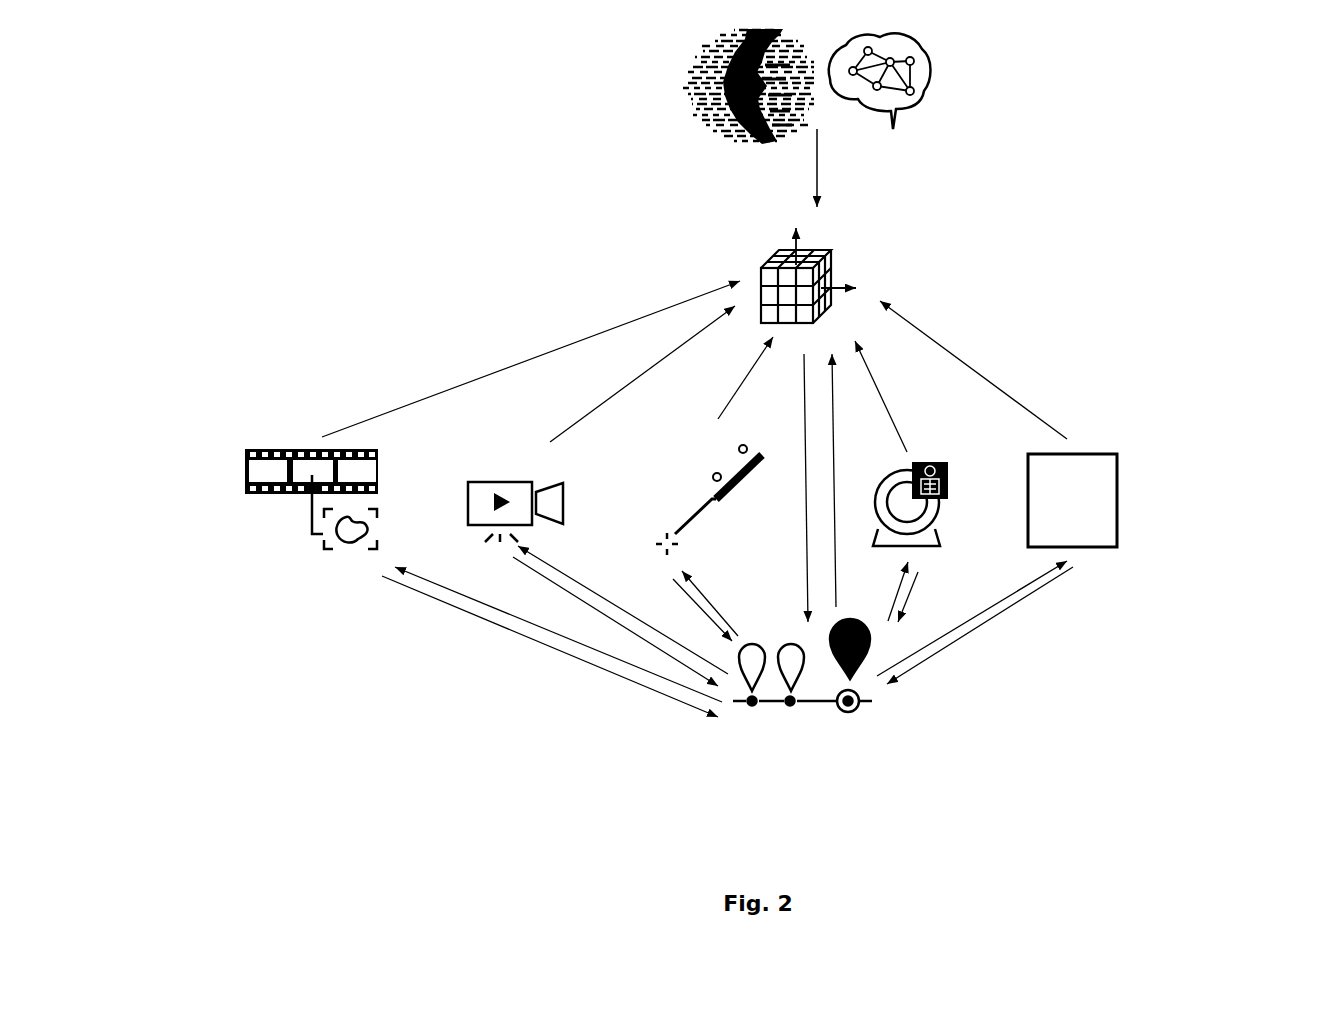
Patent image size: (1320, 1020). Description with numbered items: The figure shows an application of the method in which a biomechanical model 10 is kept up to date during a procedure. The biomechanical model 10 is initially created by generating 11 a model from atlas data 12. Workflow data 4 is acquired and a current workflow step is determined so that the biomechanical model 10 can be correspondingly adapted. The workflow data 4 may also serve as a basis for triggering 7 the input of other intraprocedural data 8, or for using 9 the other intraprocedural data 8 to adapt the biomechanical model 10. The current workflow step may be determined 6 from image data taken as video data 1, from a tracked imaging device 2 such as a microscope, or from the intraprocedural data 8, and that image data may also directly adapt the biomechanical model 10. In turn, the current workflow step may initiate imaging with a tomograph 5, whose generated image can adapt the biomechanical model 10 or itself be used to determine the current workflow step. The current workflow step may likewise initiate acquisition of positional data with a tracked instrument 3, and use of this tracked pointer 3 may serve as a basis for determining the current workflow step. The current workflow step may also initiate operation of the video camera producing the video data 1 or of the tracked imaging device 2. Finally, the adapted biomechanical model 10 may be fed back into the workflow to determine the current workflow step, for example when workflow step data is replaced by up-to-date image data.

The video data 1 is at (287, 450).
The tracked imaging device 2 is at (490, 483).
The tracked instrument 3 is at (703, 500).
The workflow data 4 is at (805, 703).
The tomograph 5 is at (900, 473).
The determining the current workflow step 6 is at (547, 648).
The triggering 7 is at (992, 604).
The intraprocedural data 8 is at (1120, 500).
The using 9 is at (963, 362).
The biomechanical model 10 is at (830, 252).
The generating 11 is at (820, 170).
The atlas data 12 is at (940, 77).